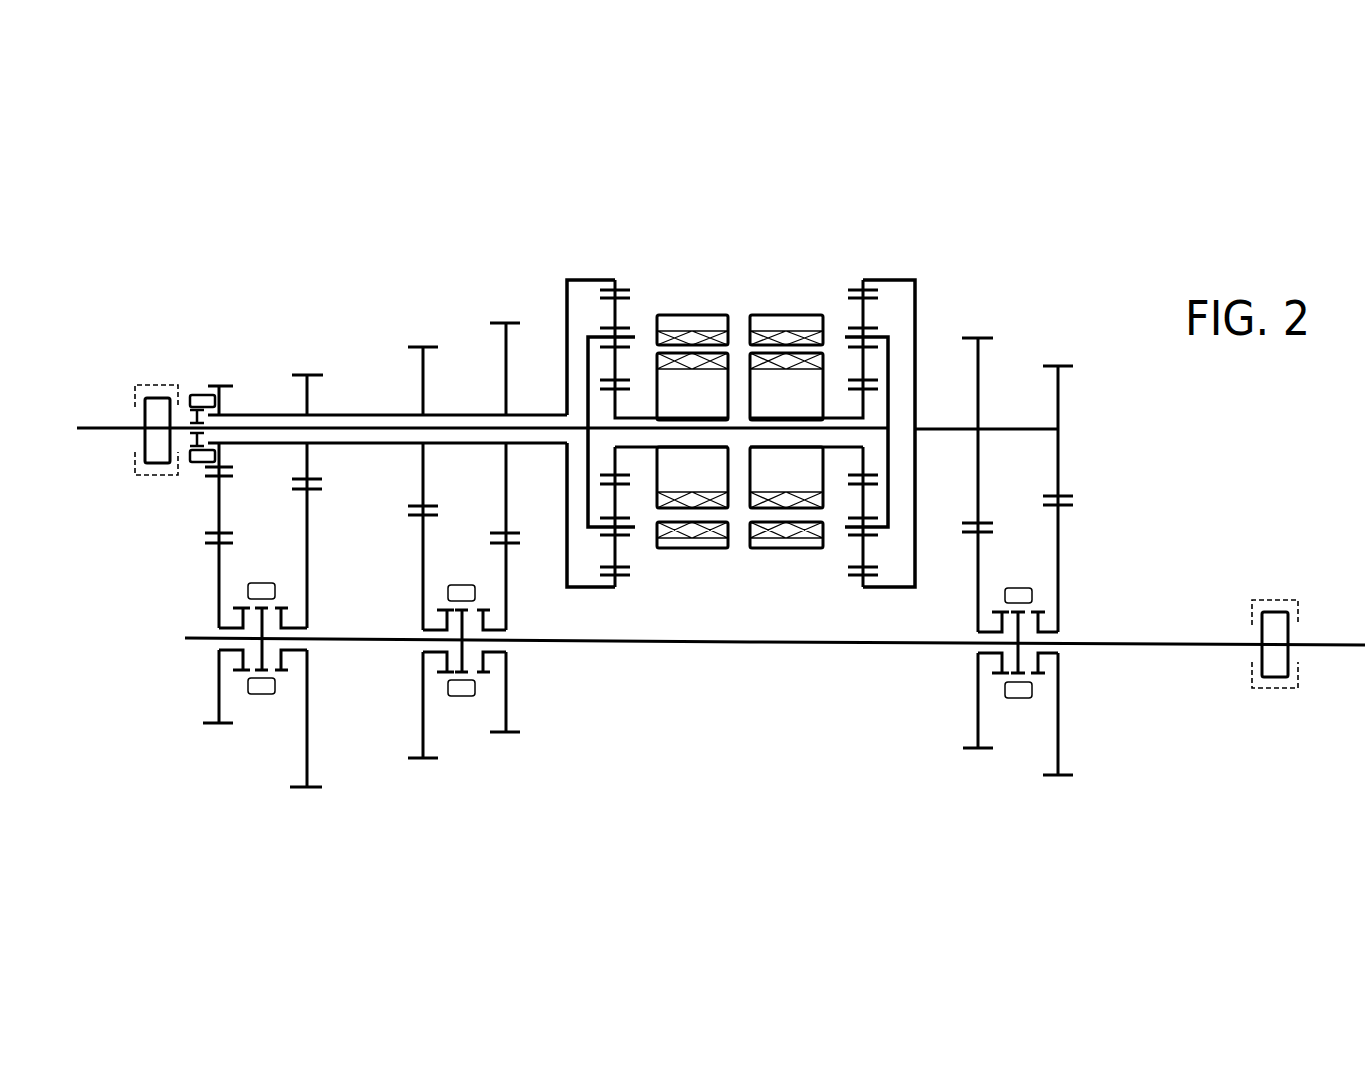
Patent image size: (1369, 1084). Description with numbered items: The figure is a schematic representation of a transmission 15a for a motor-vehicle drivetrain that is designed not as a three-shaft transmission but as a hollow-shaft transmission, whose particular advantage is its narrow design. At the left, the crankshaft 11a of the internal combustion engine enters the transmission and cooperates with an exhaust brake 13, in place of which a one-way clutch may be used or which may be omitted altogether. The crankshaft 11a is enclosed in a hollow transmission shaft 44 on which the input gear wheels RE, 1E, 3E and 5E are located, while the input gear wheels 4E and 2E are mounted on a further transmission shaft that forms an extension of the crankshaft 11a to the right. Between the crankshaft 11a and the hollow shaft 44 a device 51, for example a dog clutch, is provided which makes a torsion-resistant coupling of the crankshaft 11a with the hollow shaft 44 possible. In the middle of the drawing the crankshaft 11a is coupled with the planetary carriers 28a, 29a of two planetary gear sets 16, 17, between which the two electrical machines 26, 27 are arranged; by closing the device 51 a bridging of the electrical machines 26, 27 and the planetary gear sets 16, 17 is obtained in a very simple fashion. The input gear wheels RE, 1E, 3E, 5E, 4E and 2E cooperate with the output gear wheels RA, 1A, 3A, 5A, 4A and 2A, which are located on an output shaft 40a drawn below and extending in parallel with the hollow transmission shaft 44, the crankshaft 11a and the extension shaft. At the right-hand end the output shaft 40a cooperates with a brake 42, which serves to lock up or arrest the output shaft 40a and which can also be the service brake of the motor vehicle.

The crankshaft 11a is at (88, 427).
The exhaust brake 13 is at (143, 482).
The device 51 is at (191, 394).
The hollow transmission shaft 44 is at (351, 415).
The input gear wheel RE is at (222, 485).
The input gear wheel 1E is at (308, 478).
The input gear wheel 3E is at (426, 468).
The input gear wheel 5E is at (507, 455).
The input gear wheel 4E is at (977, 464).
The input gear wheel 2E is at (1060, 477).
The transmission 15a is at (723, 354).
The planetary gear set 16 is at (574, 367).
The planetary gear set 17 is at (888, 368).
The planetary carrier 28a is at (585, 355).
The planetary carrier 29a is at (893, 363).
The electrical machine 26 is at (690, 314).
The electrical machine 27 is at (782, 314).
The output shaft 40a is at (748, 643).
The output gear wheel RA is at (221, 712).
The output gear wheel 1A is at (307, 744).
The output gear wheel 3A is at (426, 730).
The output gear wheel 5A is at (510, 718).
The output gear wheel 4A is at (981, 726).
The output gear wheel 2A is at (1061, 741).
The brake 42 is at (1276, 593).